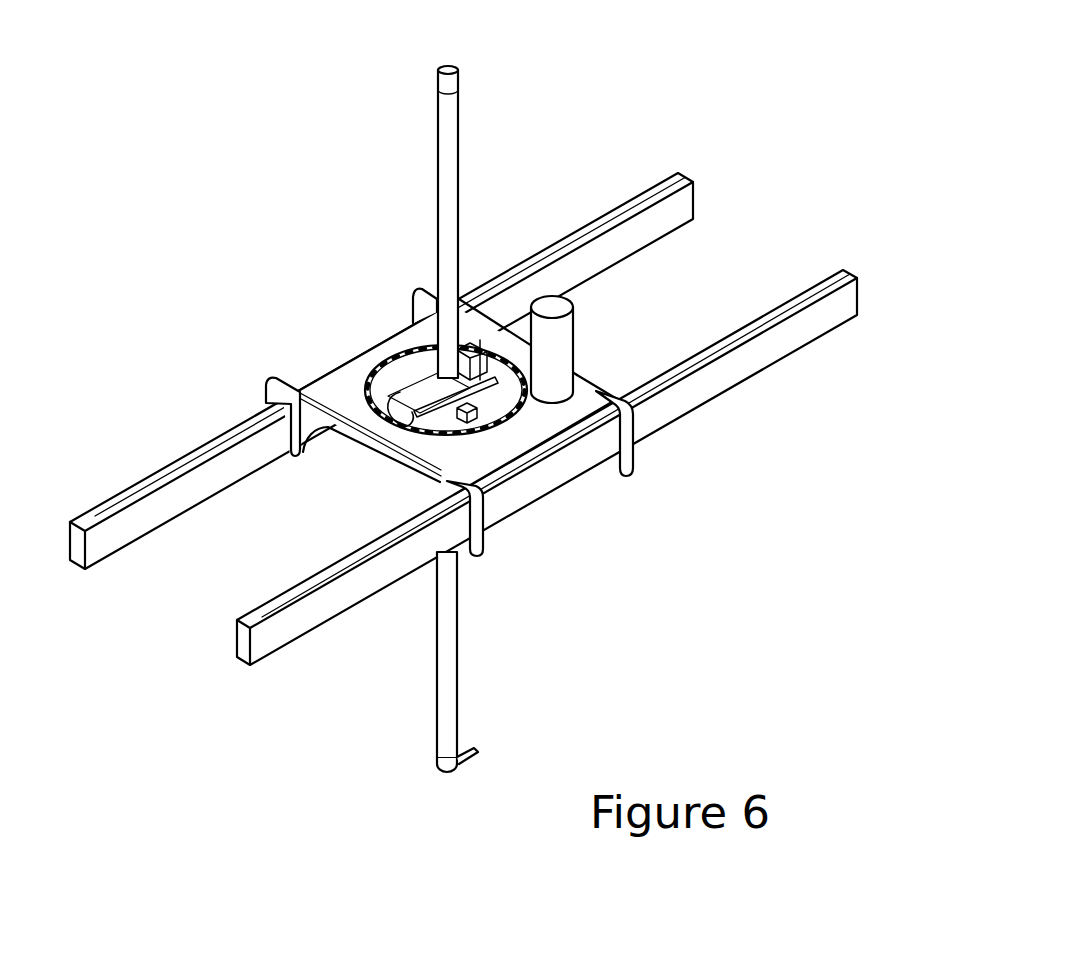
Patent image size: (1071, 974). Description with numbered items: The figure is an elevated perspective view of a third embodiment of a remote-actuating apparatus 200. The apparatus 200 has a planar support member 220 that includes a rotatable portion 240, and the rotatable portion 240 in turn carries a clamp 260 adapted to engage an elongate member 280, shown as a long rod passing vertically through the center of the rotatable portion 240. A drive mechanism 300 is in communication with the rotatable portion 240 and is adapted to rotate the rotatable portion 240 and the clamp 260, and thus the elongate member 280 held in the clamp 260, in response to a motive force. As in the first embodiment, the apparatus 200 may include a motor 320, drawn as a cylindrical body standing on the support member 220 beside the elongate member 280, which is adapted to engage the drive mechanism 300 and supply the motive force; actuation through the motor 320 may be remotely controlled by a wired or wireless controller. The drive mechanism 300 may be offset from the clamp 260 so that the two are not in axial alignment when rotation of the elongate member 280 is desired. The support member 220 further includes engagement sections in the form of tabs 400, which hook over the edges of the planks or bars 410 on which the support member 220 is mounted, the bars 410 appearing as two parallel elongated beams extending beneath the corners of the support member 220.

The apparatus 200 is at (650, 85).
The planar support member 220 is at (352, 370).
The rotatable portion 240 is at (390, 388).
The clamp 260 is at (430, 400).
The elongate member 280 is at (458, 160).
The drive mechanism 300 is at (593, 367).
The motor 320 is at (568, 297).
The tabs 400 is at (264, 387).
The planks or bars 410 is at (122, 450).